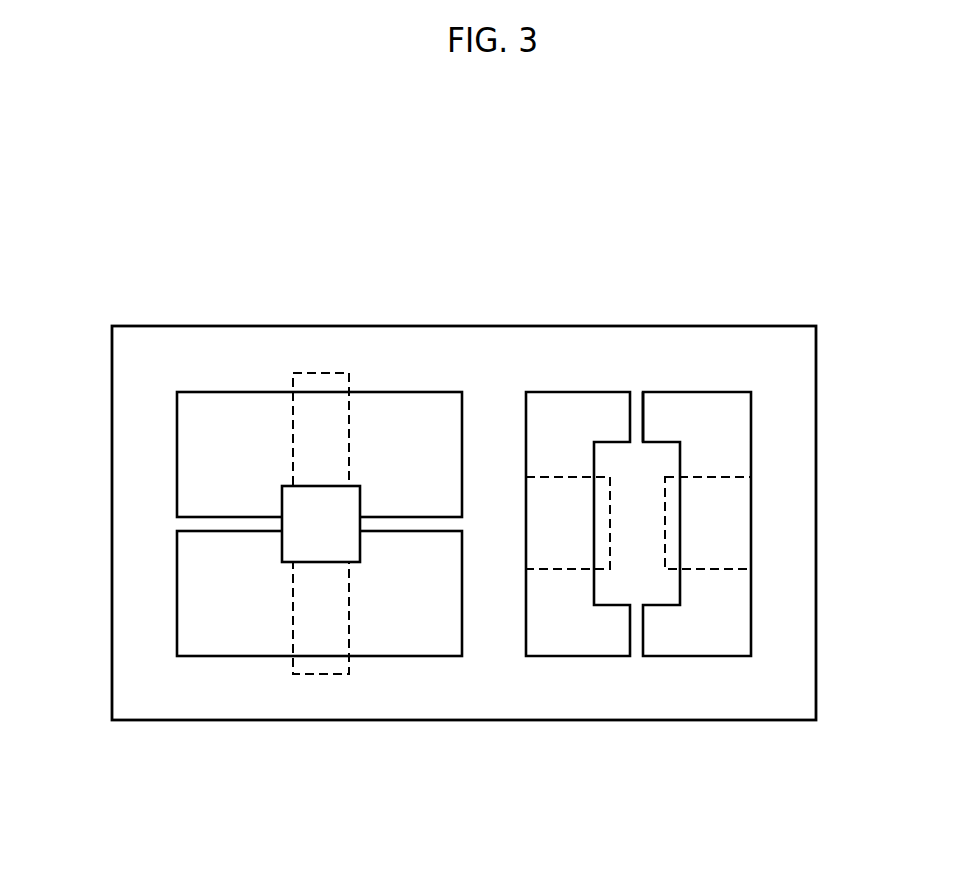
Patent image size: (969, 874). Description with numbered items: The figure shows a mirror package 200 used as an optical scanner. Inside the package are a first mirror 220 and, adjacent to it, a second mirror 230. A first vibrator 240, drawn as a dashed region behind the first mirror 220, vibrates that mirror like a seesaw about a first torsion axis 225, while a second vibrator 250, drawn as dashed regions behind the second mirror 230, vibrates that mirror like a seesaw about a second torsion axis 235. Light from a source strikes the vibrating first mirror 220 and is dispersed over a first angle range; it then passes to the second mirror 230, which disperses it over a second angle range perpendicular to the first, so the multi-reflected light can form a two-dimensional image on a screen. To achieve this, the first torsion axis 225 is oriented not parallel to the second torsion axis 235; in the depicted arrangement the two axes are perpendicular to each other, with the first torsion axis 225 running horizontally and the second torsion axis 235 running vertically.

The mirror package 200 is at (268, 297).
The first mirror 220 is at (320, 486).
The first torsion axis 225 is at (230, 517).
The second mirror 230 is at (668, 448).
The second torsion axis 235 is at (645, 415).
The first vibrator 240 is at (320, 674).
The second vibrator 250 is at (665, 523).